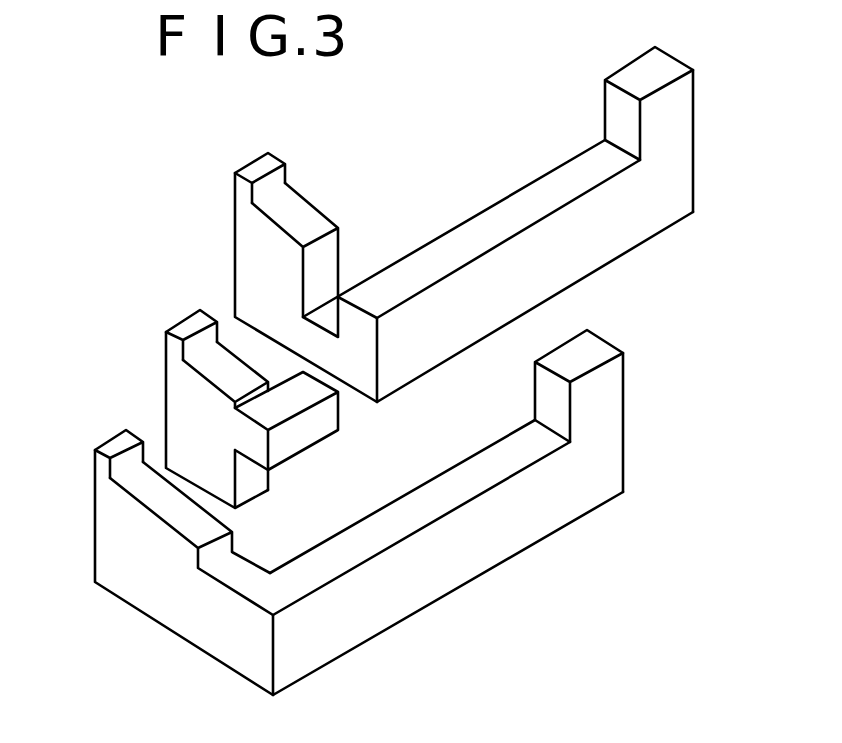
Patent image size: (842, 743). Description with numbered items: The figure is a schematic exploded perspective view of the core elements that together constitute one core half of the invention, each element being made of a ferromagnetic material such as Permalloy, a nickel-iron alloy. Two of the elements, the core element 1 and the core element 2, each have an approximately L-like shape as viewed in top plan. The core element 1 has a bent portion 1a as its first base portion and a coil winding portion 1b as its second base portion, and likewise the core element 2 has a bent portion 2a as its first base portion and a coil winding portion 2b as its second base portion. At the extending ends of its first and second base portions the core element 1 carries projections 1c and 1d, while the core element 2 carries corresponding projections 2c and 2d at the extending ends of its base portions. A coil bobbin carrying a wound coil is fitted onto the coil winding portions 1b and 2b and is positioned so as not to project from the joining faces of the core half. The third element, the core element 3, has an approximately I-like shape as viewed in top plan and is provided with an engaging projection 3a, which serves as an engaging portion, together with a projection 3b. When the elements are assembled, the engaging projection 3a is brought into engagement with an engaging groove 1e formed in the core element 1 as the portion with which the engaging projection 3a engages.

The core element 1 is at (463, 224).
The bent portion 1a is at (265, 282).
The coil winding portion 1b is at (575, 252).
The projection 1c is at (240, 190).
The projection 1d is at (672, 93).
The engaging groove 1e is at (320, 268).
The core element 2 is at (357, 529).
The bent portion 2a is at (167, 583).
The coil winding portion 2b is at (370, 627).
The projection 2c is at (102, 467).
The projection 2d is at (598, 377).
The core element 3 is at (221, 404).
The engaging projection 3a is at (290, 407).
The projection 3b is at (173, 345).